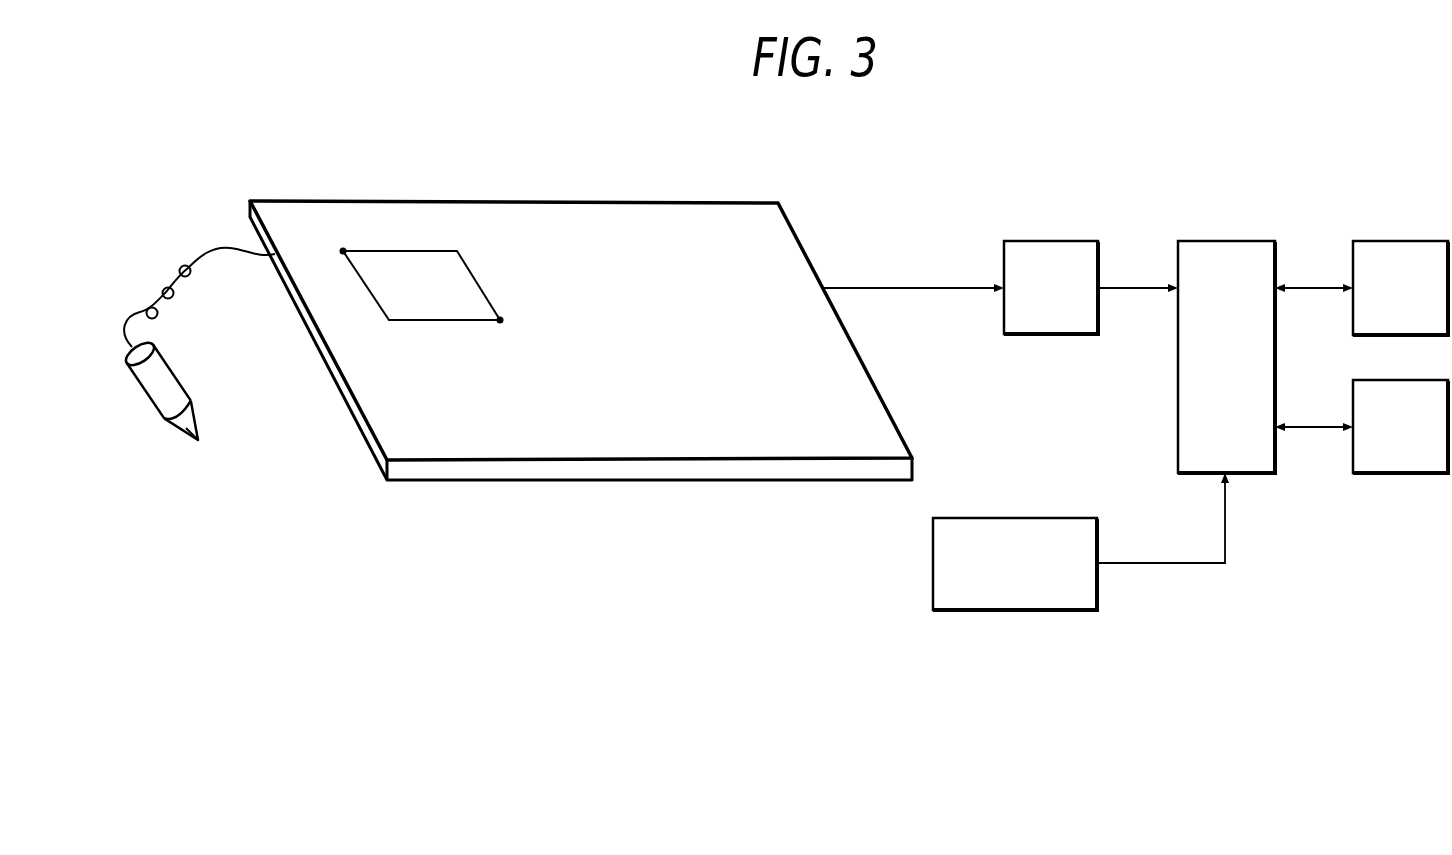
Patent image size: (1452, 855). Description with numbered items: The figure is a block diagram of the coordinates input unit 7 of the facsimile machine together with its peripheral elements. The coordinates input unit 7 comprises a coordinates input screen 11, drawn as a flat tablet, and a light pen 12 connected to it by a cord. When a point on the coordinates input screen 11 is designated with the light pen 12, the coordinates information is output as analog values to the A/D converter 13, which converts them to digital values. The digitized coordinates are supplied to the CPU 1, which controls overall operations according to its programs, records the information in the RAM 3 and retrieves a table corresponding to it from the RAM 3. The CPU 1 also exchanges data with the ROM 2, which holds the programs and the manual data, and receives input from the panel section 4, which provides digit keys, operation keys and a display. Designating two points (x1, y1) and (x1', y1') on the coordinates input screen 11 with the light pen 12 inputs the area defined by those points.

The CPU 1 is at (1226, 332).
The ROM 2 is at (1400, 263).
The RAM 3 is at (1400, 451).
The panel section 4 is at (1081, 537).
The coordinates input unit 7 is at (581, 380).
The coordinates input screen 11 is at (581, 301).
The light pen 12 is at (198, 344).
The A/D converter 13 is at (1052, 263).